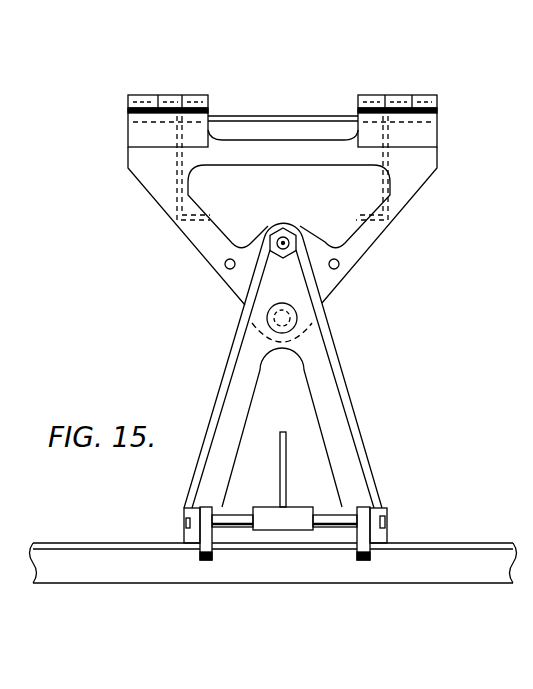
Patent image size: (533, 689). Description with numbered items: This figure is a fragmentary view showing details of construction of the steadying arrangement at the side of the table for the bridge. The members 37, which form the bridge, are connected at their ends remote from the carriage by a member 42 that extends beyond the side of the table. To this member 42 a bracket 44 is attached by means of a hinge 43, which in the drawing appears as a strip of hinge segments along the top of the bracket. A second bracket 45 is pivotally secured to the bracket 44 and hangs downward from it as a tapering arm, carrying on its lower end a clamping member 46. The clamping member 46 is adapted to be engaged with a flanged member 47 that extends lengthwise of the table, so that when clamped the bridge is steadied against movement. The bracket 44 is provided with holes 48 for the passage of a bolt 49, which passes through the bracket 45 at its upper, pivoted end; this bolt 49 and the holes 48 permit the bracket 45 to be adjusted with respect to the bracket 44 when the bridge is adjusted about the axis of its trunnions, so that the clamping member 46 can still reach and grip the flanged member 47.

The members forming the bridge 37 is at (178, 193).
The member 42 is at (275, 118).
The hinge 43 is at (205, 94).
The bracket 44 is at (438, 137).
The bracket 45 is at (338, 400).
The clamping member 46 is at (365, 528).
The flanged member 47 is at (473, 553).
The holes 48 is at (224, 265).
The bolt 49 is at (283, 240).